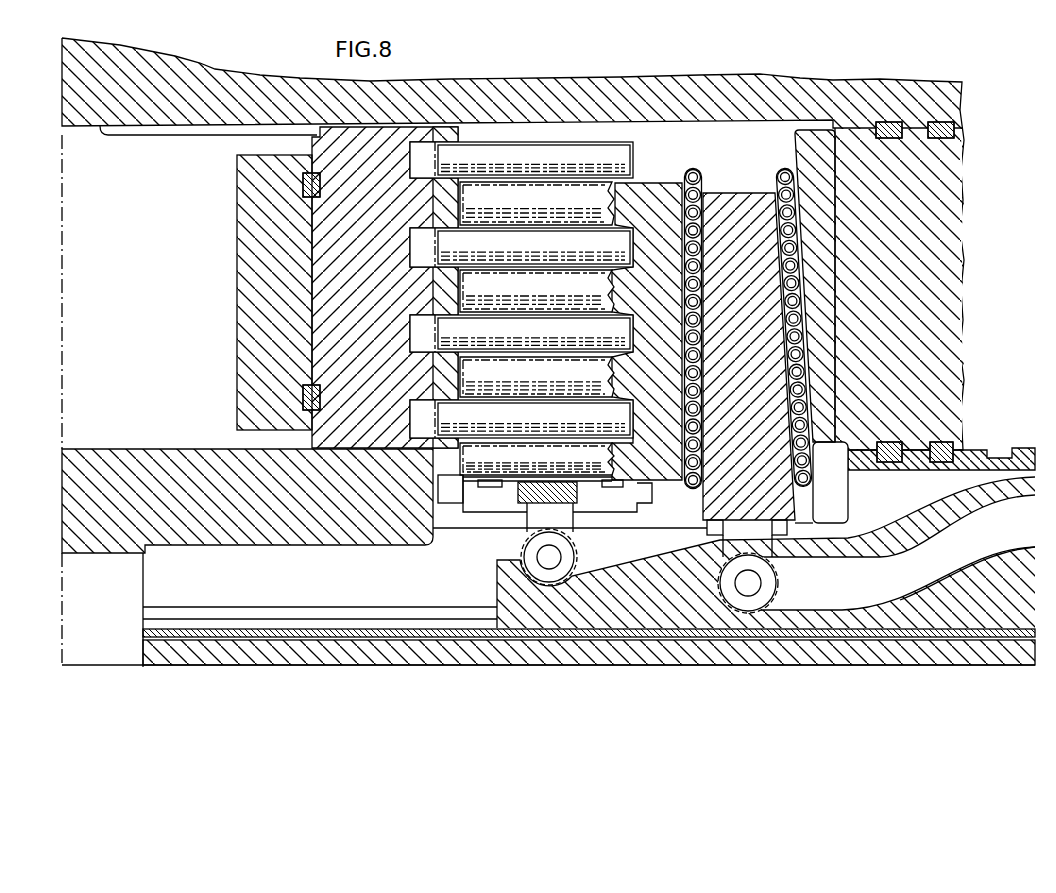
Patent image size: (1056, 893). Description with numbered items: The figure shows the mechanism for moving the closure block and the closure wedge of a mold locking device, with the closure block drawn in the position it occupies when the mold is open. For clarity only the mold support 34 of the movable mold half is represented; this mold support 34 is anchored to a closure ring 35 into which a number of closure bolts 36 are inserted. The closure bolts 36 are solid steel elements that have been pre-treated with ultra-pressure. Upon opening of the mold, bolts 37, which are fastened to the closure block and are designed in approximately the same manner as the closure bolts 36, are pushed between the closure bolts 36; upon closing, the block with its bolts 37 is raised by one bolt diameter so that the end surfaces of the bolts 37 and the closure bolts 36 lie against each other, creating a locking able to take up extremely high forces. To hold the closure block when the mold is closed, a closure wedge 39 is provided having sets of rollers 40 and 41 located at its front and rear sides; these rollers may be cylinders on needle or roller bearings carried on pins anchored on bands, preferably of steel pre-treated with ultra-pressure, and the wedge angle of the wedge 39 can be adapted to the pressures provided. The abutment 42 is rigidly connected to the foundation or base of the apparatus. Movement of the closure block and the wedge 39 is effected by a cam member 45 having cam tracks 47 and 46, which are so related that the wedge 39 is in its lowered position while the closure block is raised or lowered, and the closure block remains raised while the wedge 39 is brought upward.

The mold support 34 is at (237, 262).
The closure ring 35 is at (330, 358).
The closure bolts 36 is at (509, 150).
The bolts 37 is at (600, 197).
The closure wedge 39 is at (760, 186).
The set of rollers 40 is at (701, 178).
The set of rollers 41 is at (778, 176).
The abutment 42 is at (817, 135).
The cam member 45 is at (979, 573).
The cam track 46 is at (873, 537).
The cam track 47 is at (842, 610).